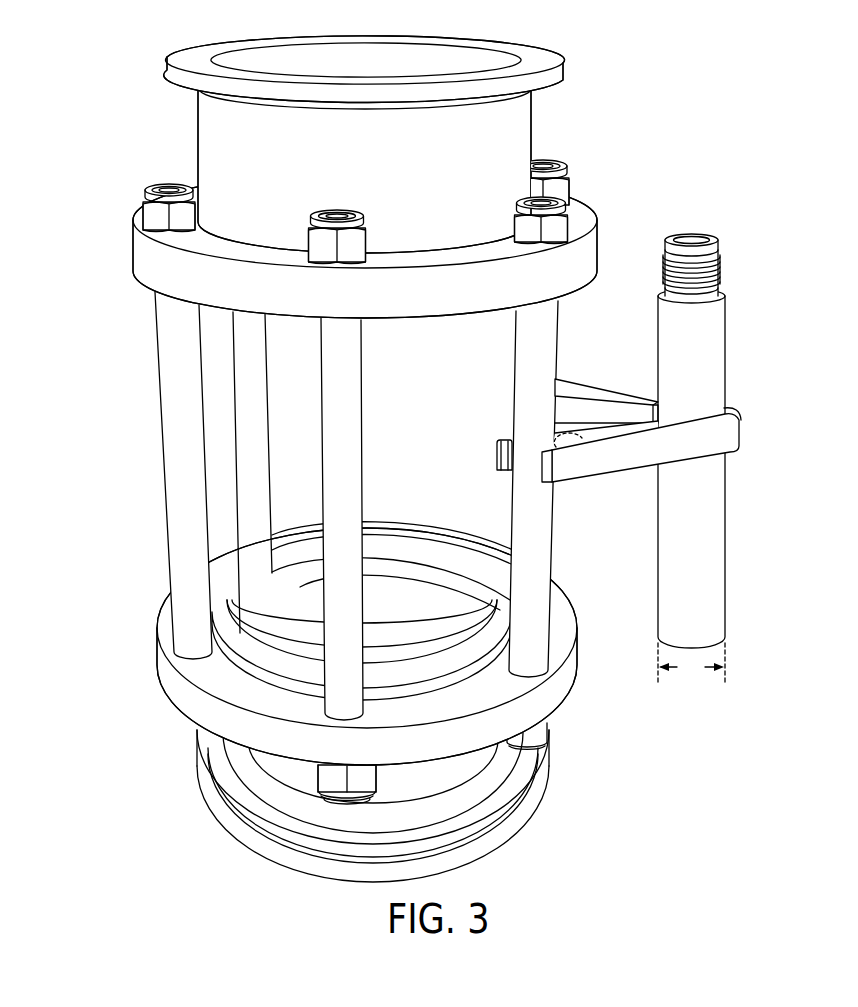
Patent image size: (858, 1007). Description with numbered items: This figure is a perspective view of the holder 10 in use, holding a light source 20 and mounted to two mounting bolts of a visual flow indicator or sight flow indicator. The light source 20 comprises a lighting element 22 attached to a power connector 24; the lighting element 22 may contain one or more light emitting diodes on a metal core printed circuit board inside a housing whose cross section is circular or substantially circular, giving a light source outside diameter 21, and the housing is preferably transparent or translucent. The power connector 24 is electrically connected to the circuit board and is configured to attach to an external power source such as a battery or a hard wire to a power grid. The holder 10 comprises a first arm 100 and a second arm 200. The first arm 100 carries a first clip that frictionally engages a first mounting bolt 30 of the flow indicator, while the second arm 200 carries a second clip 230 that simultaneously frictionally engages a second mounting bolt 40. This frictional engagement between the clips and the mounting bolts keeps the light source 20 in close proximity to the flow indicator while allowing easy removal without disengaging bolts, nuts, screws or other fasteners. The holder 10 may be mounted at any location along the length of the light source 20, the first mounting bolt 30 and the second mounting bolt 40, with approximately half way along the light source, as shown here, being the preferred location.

The holder 10 is at (636, 422).
The light source 20 is at (725, 426).
The light source outside diameter 21 is at (691, 664).
The lighting element 22 is at (707, 525).
The power connector 24 is at (700, 238).
The first mounting bolt 30 is at (560, 193).
The second mounting bolt 40 is at (540, 544).
The first arm 100 is at (605, 393).
The second arm 200 is at (602, 437).
The second clip 230 is at (570, 465).